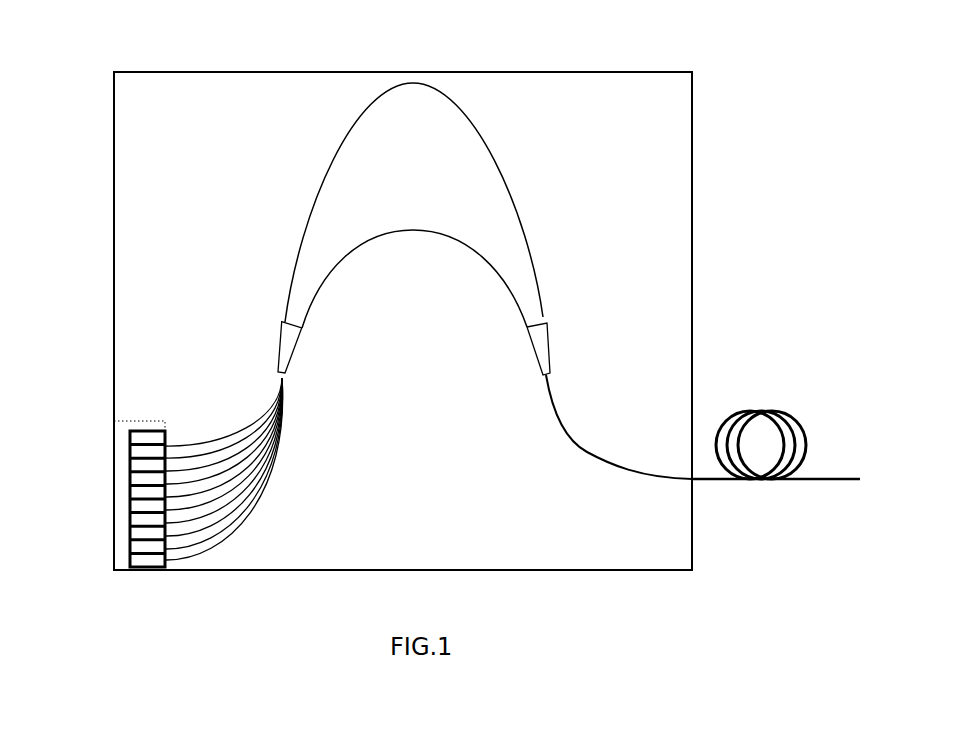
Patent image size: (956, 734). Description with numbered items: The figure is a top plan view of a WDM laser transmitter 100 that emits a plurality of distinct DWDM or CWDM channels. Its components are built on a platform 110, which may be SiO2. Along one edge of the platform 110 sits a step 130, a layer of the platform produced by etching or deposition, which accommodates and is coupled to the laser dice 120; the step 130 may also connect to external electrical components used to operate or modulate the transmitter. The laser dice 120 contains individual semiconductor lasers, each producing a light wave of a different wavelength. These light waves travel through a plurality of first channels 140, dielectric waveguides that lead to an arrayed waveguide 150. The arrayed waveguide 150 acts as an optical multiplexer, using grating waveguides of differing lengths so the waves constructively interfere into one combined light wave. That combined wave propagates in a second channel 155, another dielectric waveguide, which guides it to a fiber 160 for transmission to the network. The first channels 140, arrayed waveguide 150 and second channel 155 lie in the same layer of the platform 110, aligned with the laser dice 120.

The WDM laser transmitter 100 is at (82, 73).
The platform 110 is at (659, 110).
The laser dice 120 is at (147, 430).
The step 130 is at (122, 467).
The first channels 140 is at (283, 411).
The arrayed waveguide (AWG) 150 is at (487, 135).
The second channel 155 is at (587, 450).
The fiber 160 is at (768, 410).